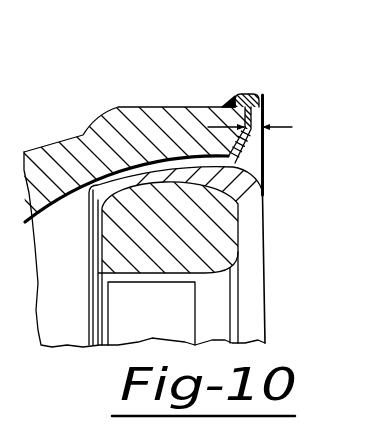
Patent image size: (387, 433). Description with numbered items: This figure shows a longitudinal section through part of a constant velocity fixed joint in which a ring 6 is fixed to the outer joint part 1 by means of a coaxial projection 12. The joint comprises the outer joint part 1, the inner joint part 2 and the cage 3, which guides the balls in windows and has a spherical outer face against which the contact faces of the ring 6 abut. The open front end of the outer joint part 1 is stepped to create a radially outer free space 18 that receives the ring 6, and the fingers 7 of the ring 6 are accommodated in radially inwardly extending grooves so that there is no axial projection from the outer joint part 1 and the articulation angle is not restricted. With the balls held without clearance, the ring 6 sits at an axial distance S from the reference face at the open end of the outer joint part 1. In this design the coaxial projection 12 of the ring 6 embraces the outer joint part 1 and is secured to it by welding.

The outer joint part 1 is at (130, 135).
The inner joint part 2 is at (125, 212).
The cage 3 is at (158, 178).
The ring 6 is at (248, 93).
The fingers 7 is at (264, 96).
The coaxial projection 12 is at (236, 99).
The radially outer free space 18 is at (265, 140).
The axial distance S is at (251, 115).